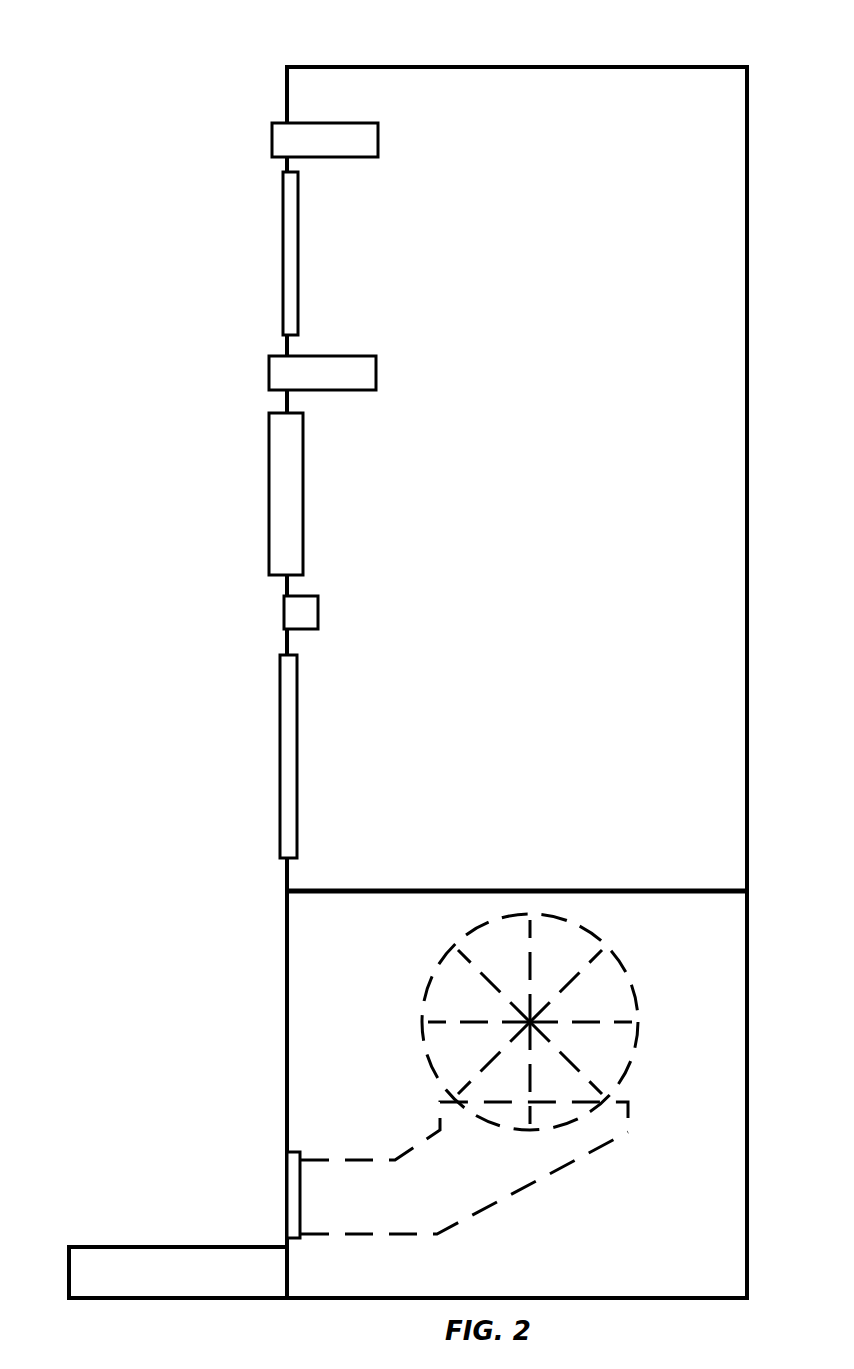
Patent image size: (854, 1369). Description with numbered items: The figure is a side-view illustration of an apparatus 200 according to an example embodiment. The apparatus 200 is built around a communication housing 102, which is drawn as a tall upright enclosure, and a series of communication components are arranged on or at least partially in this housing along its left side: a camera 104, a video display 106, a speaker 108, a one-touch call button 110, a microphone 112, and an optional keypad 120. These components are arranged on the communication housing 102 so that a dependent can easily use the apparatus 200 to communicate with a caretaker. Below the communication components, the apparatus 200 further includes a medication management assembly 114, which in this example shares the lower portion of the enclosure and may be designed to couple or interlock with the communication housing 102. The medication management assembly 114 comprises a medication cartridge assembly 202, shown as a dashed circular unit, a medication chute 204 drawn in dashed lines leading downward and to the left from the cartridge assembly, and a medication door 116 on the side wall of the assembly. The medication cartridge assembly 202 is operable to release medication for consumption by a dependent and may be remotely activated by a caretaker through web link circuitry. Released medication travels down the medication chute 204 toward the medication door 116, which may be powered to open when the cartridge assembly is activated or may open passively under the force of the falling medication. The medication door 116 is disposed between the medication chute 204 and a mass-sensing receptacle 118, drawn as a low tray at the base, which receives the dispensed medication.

The apparatus 200 is at (262, 31).
The communication housing 102 is at (285, 93).
The camera 104 is at (272, 142).
The video display 106 is at (283, 243).
The speaker 108 is at (269, 372).
The one-touch call button 110 is at (269, 487).
The microphone 112 is at (284, 611).
The keypad 120 is at (280, 738).
The medication management assembly 114 is at (287, 1047).
The medication door 116 is at (287, 1190).
The mass-sensing receptacle 118 is at (190, 1245).
The medication cartridge assembly 202 is at (453, 945).
The medication chute 204 is at (408, 1145).